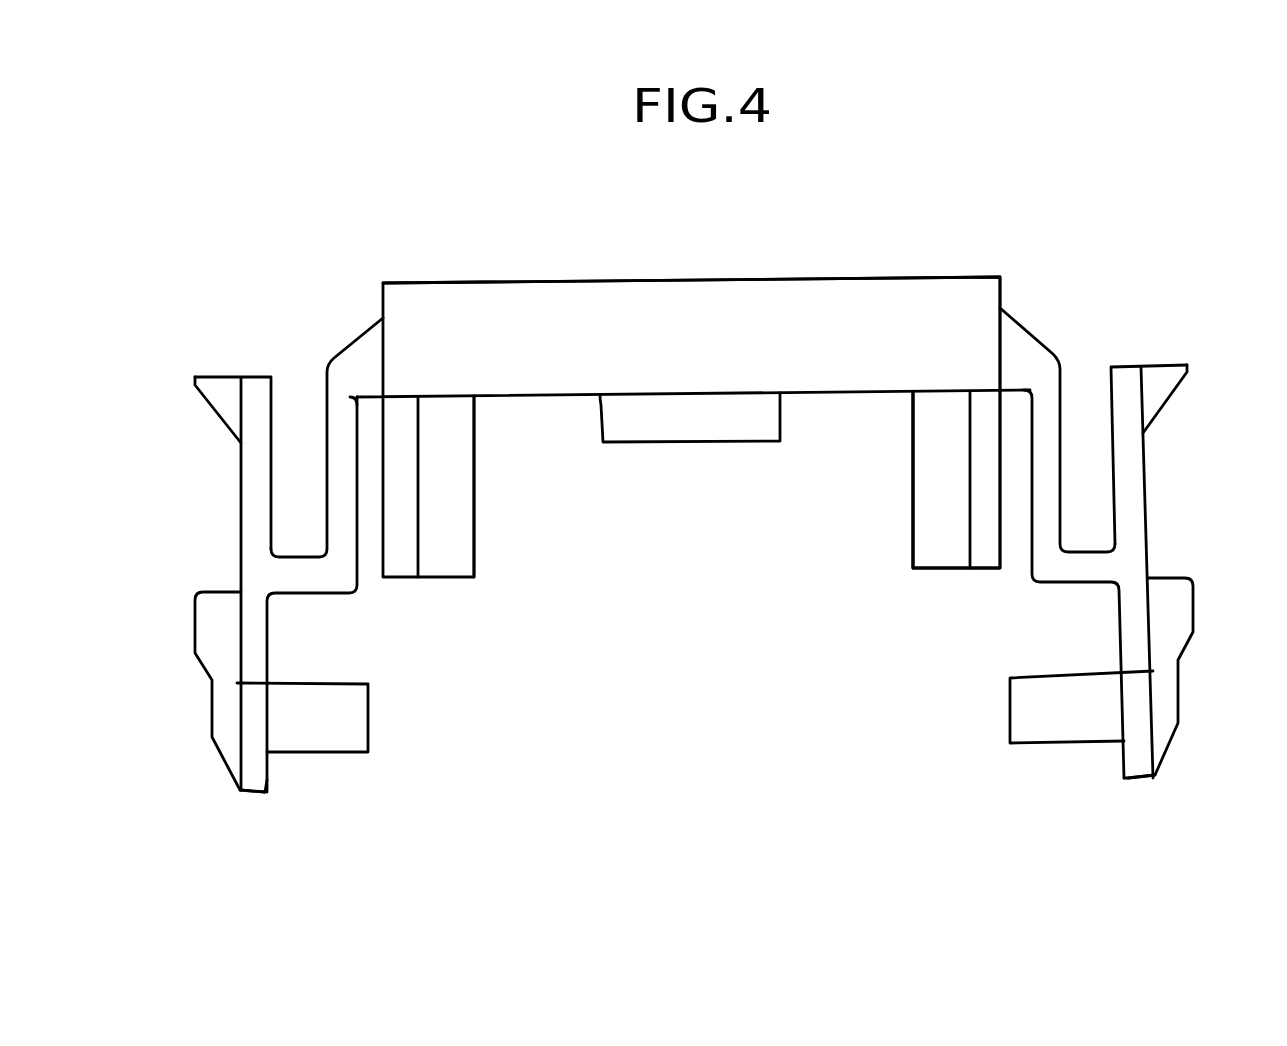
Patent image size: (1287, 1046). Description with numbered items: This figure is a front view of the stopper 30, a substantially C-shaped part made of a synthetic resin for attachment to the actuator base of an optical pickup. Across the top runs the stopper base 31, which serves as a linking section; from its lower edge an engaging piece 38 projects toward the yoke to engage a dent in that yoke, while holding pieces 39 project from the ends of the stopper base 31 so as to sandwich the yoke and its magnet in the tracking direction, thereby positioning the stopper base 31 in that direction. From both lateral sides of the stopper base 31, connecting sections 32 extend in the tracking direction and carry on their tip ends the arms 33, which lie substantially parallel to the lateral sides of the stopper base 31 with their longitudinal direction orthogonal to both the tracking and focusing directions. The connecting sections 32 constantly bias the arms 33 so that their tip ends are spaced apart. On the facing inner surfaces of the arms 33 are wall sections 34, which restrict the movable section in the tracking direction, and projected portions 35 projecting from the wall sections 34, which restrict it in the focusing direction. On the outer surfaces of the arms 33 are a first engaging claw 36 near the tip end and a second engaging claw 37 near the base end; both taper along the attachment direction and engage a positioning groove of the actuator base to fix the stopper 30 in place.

The stopper 30 is at (764, 210).
The stopper base 31 is at (574, 296).
The connecting sections 32 is at (343, 367).
The arms 33 is at (258, 384).
The wall sections 34 is at (258, 778).
The projected portions 35 is at (358, 722).
The first engaging claw 36 is at (202, 608).
The second engaging claw 37 is at (211, 392).
The engaging piece 38 is at (691, 441).
The holding pieces 39 is at (470, 565).